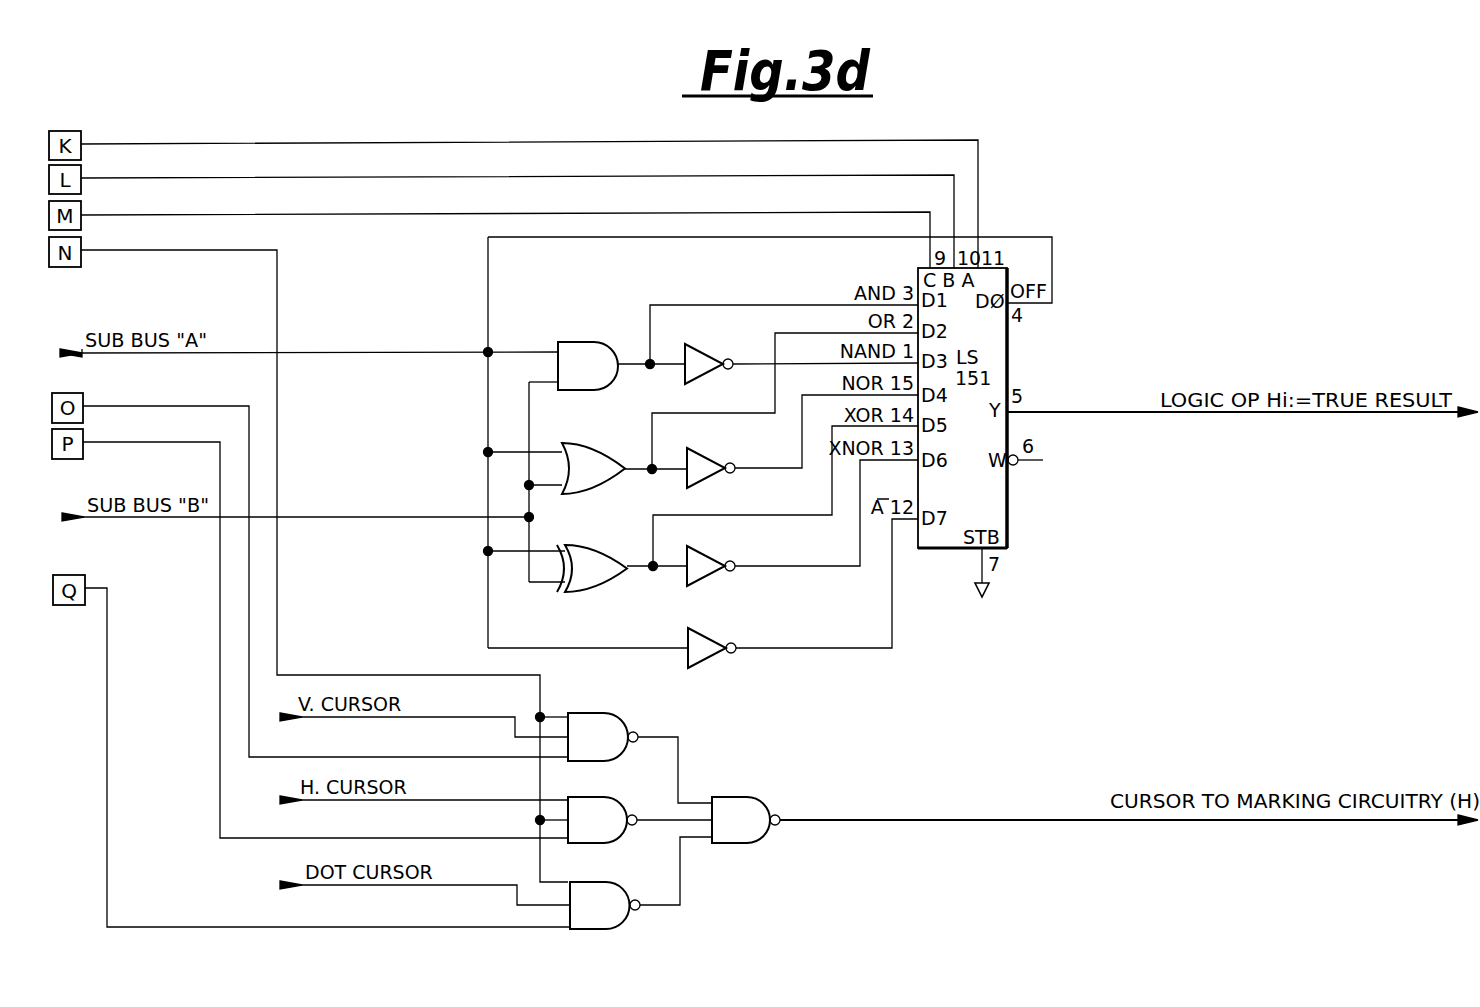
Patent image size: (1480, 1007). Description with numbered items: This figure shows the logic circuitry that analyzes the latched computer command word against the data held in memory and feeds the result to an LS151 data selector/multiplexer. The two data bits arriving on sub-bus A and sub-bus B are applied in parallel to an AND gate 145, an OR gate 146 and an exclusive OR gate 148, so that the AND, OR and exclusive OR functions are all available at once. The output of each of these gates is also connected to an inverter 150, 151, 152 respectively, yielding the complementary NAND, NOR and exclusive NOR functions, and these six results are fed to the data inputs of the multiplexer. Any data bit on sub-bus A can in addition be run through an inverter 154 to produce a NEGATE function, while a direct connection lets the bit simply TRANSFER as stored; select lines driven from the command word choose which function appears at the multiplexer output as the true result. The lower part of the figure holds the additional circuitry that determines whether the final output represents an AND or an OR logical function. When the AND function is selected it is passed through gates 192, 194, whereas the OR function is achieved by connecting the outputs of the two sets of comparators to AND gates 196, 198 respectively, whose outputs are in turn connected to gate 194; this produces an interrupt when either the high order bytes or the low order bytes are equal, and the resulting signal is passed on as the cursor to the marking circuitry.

The AND gate 145 is at (585, 342).
The OR gate 146 is at (588, 443).
The exclusive OR gate 148 is at (590, 545).
The inverter 150 is at (710, 372).
The inverter 151 is at (712, 476).
The inverter 152 is at (712, 574).
The inverter 154 is at (713, 658).
The AND gate 196 is at (618, 713).
The AND gate 198 is at (612, 797).
The gate 192 is at (612, 882).
The gate 194 is at (758, 838).